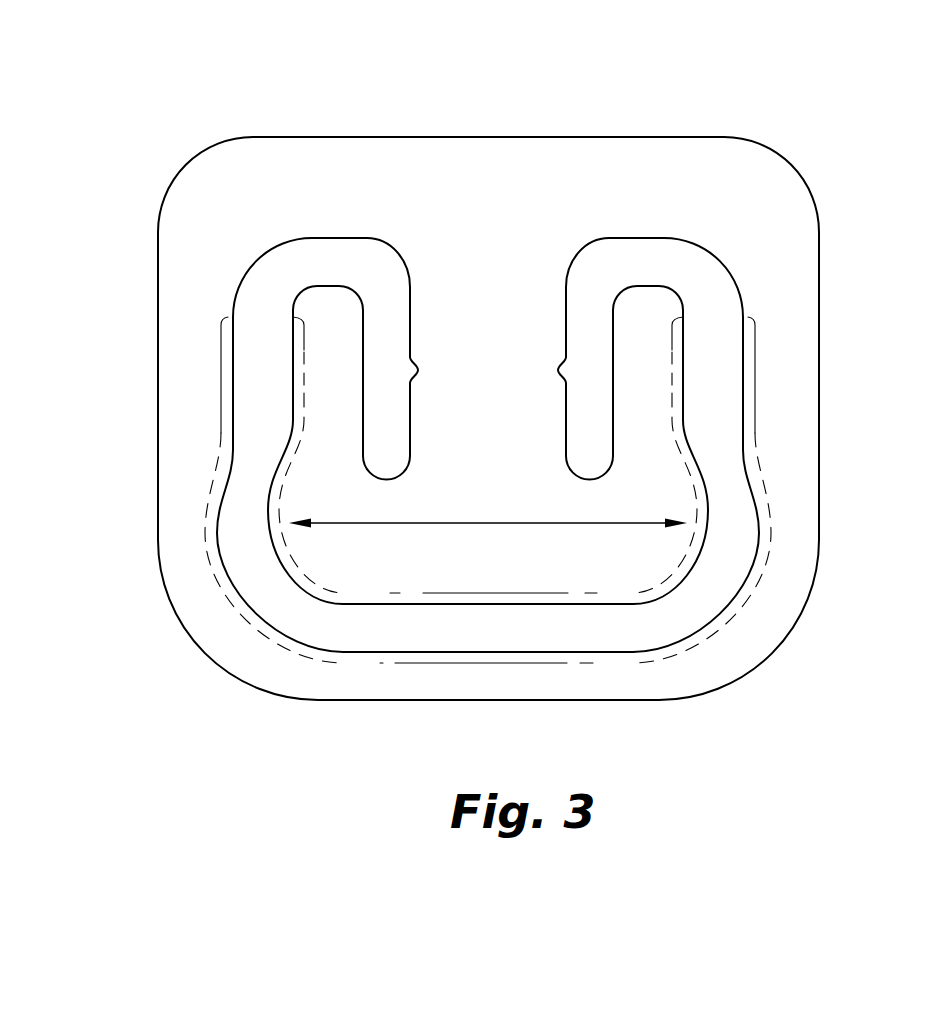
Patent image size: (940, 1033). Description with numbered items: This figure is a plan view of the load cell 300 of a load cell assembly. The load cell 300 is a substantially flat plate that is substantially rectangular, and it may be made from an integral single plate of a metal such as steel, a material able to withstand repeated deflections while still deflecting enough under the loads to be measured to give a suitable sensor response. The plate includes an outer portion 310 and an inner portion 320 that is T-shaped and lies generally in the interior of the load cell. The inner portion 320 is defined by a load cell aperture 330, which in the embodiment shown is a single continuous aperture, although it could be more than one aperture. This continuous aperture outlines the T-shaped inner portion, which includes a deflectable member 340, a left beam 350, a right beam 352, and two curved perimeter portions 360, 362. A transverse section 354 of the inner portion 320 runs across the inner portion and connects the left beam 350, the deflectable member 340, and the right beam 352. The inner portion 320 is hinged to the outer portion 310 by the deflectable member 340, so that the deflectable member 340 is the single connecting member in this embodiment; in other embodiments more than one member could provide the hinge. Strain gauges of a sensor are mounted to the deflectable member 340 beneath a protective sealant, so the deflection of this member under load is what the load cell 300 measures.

The load cell 300 is at (580, 137).
The outer portion 310 is at (788, 373).
The inner portion 320 is at (665, 488).
The load cell aperture 330 is at (737, 530).
The deflectable member 340 is at (481, 298).
The left beam 350 is at (650, 330).
The right beam 352 is at (327, 393).
The transverse section 354 is at (488, 523).
The curved perimeter portion 360 is at (693, 572).
The curved perimeter portion 362 is at (283, 570).